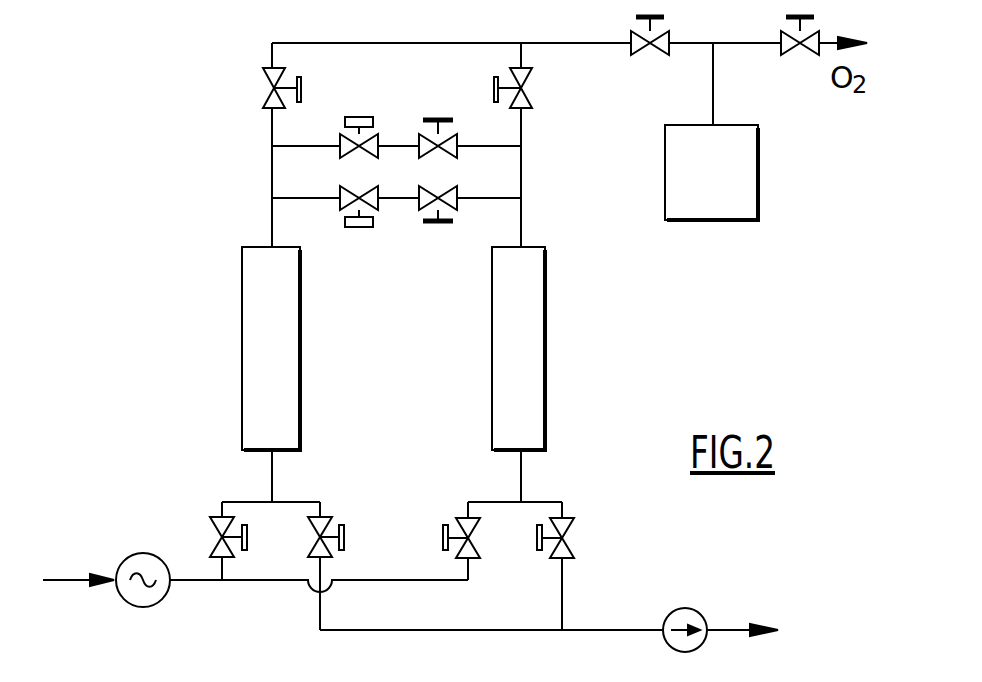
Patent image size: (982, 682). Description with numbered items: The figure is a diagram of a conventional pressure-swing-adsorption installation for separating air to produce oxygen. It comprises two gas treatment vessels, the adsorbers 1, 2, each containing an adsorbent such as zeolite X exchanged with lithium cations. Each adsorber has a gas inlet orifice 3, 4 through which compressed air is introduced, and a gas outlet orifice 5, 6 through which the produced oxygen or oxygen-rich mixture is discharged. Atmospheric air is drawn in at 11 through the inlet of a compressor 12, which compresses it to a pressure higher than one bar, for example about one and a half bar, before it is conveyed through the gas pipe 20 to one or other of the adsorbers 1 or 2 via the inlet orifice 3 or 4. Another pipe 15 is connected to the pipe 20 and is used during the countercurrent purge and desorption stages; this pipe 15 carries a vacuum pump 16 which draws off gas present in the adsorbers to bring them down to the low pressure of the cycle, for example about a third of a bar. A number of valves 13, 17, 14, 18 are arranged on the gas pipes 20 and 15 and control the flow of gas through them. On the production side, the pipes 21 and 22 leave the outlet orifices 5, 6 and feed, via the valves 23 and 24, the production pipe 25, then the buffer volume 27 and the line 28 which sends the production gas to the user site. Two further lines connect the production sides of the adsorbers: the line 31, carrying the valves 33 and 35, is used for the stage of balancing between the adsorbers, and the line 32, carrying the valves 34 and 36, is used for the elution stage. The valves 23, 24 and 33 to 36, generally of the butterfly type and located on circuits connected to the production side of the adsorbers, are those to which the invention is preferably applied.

The adsorber 1 is at (285, 352).
The adsorber 2 is at (528, 363).
The gas inlet orifice 3 is at (277, 458).
The gas inlet orifice 4 is at (520, 457).
The gas outlet orifice 5 is at (268, 243).
The gas outlet orifice 6 is at (525, 247).
The air intake 11 is at (73, 582).
The compressor 12 is at (163, 556).
The valve 13 is at (213, 532).
The valve 14 is at (460, 520).
The pipe 15 is at (637, 630).
The vacuum pump 16 is at (703, 612).
The valve 17 is at (313, 522).
The valve 18 is at (568, 533).
The gas pipe 20 is at (195, 590).
The pipe 21 is at (268, 122).
The pipe 22 is at (522, 127).
The valve 23 is at (270, 90).
The valve 24 is at (530, 90).
The production pipe 25 is at (587, 42).
The buffer volume 27 is at (730, 191).
The line 28 is at (779, 42).
The line 31 is at (458, 152).
The line 32 is at (458, 205).
The valve 33 is at (447, 137).
The valve 34 is at (418, 208).
The valve 35 is at (377, 137).
The valve 36 is at (378, 208).